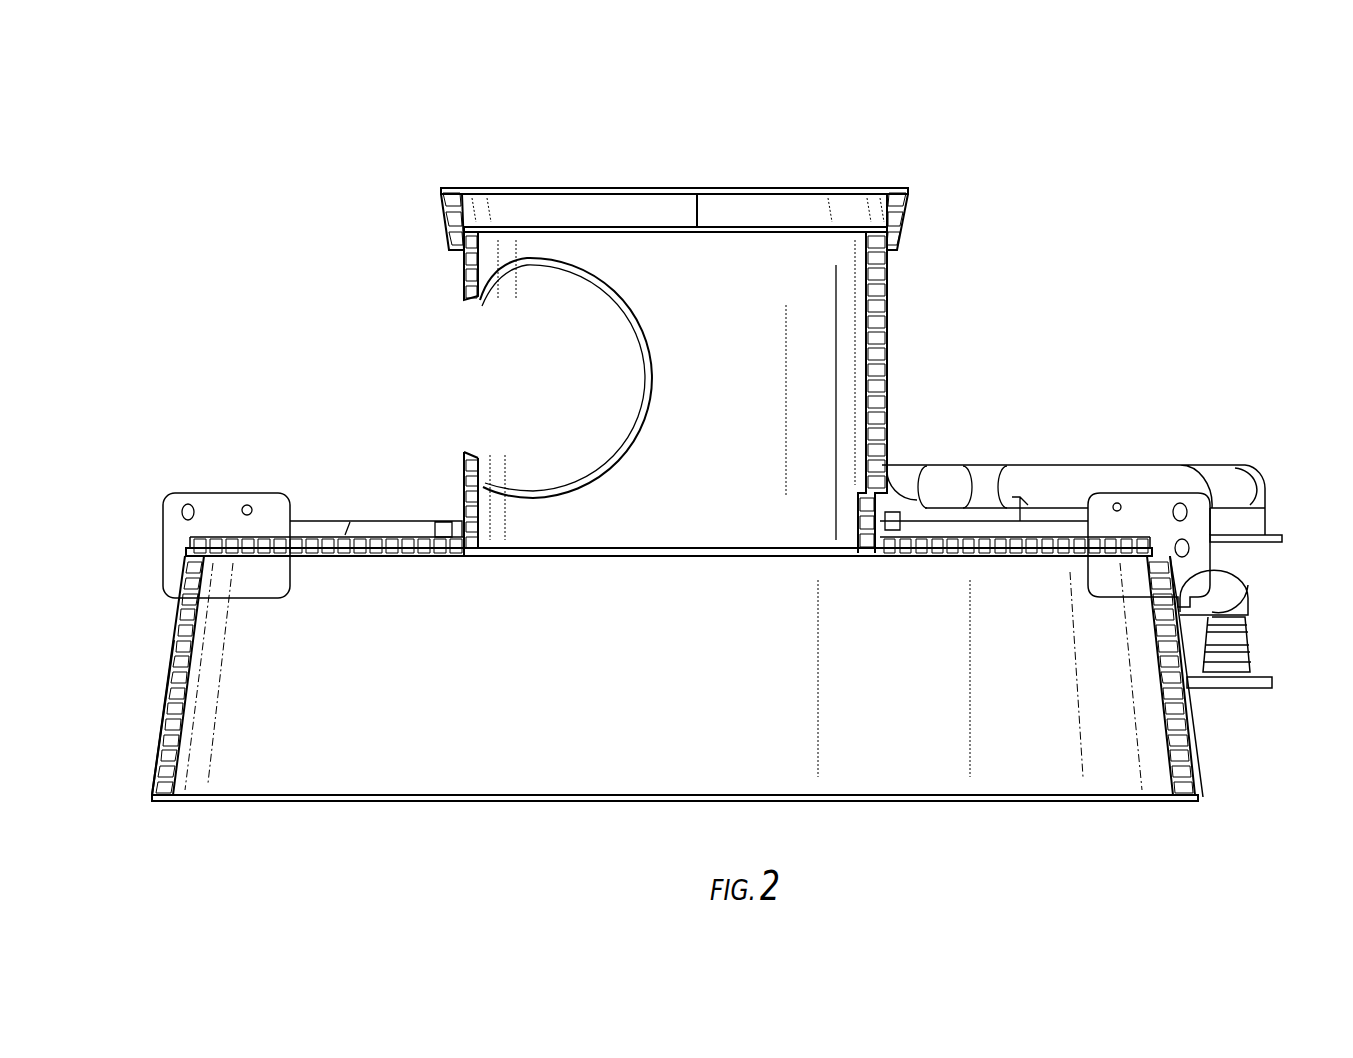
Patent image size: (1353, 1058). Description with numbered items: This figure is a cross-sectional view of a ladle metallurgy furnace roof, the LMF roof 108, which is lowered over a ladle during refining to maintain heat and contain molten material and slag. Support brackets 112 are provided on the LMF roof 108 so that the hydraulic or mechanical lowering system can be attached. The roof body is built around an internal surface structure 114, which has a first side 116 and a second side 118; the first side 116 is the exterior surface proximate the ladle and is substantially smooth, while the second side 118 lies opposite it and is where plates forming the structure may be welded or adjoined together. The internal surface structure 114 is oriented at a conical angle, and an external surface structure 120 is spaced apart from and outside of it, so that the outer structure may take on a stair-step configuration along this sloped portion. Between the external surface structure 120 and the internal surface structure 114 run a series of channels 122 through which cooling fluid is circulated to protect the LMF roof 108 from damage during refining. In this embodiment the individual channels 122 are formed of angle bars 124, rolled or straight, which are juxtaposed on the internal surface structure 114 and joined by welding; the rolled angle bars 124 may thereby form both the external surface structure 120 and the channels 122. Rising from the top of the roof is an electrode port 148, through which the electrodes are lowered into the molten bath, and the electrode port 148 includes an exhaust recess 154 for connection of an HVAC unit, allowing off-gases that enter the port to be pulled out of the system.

The LMF roof 108 is at (1014, 324).
The support brackets 112 is at (1163, 512).
The internal surface structure 114 is at (183, 728).
The internal surface structure first side 116 is at (265, 765).
The internal surface structure second side 118 is at (167, 762).
The external surface structure 120 is at (177, 616).
The channels 122 is at (278, 543).
The angle bars 124 is at (1180, 712).
The electrode port 148 is at (730, 316).
The exhaust recess 154 is at (563, 362).